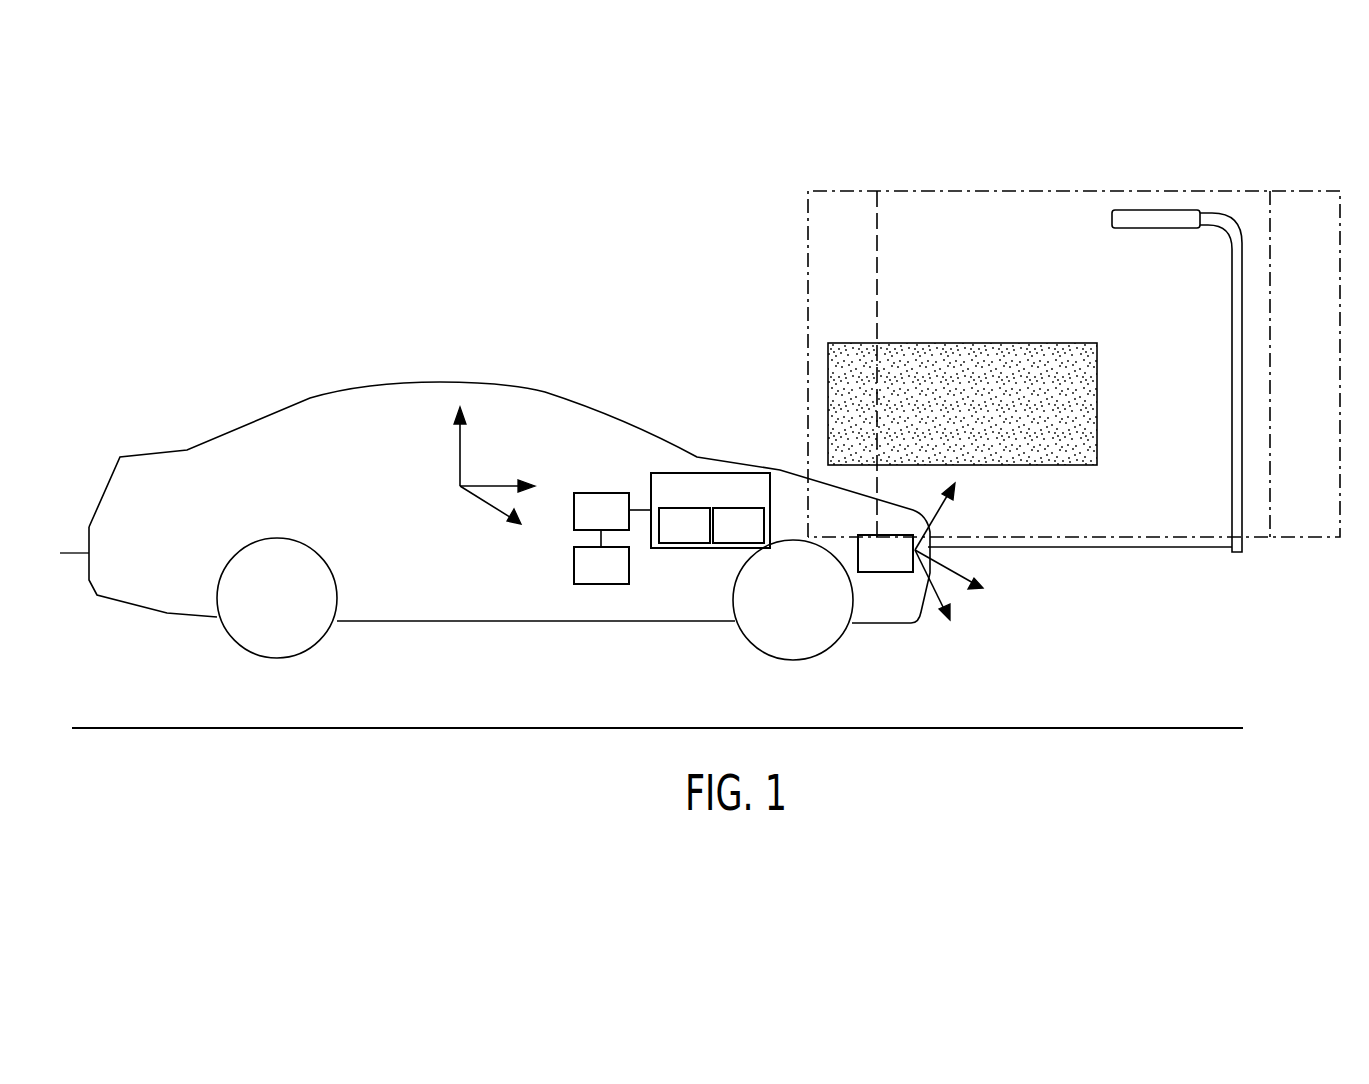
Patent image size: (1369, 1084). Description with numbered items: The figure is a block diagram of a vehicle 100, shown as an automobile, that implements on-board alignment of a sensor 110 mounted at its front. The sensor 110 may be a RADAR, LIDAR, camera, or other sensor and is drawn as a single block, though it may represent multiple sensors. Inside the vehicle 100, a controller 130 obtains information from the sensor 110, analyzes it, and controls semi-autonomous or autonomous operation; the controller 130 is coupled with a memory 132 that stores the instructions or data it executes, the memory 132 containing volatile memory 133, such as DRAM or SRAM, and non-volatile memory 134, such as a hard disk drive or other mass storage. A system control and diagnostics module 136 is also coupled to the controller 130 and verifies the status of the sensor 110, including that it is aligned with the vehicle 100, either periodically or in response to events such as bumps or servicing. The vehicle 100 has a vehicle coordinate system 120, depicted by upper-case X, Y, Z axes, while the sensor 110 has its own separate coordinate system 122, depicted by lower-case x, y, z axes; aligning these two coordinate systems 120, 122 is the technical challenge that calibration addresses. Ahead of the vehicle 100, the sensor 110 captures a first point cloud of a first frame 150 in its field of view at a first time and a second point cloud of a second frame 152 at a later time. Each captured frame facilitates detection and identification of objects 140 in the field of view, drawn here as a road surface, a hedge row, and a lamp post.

The vehicle 100 is at (142, 453).
The sensor 110 is at (871, 568).
The vehicle coordinate system 120 is at (463, 460).
The sensor coordinate system 122 is at (937, 515).
The controller 130 is at (587, 526).
The memory 132 is at (698, 504).
The volatile memory 133 is at (670, 542).
The non-volatile memory 134 is at (724, 542).
The system control and diagnostics module 136 is at (587, 580).
The objects 140 is at (1013, 343).
The first frame 150 is at (808, 283).
The second frame 152 is at (872, 270).